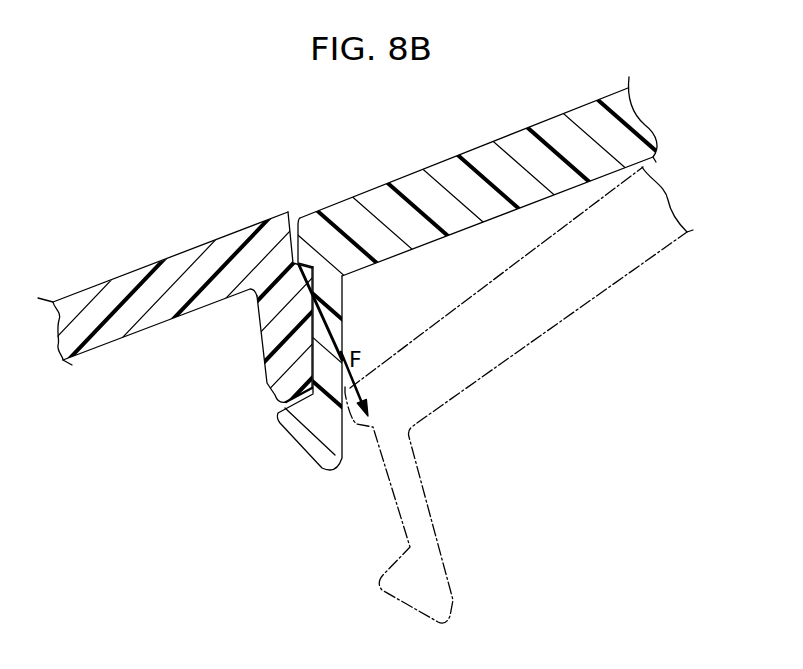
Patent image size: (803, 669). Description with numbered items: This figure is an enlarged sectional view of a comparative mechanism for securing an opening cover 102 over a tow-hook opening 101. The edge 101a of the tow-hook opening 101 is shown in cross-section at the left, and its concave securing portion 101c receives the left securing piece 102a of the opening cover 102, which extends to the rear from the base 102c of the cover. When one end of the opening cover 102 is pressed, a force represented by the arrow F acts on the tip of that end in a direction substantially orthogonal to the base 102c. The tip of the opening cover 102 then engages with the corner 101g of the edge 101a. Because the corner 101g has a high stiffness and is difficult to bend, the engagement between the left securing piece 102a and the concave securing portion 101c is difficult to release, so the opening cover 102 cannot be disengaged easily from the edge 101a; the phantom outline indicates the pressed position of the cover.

The tow-hook opening 101 is at (291, 219).
The corner 101g is at (262, 245).
The edge 101a is at (270, 333).
The concave securing portion 101c is at (322, 342).
The opening cover 102 is at (523, 128).
The base 102c is at (418, 188).
The left securing piece 102a is at (313, 450).